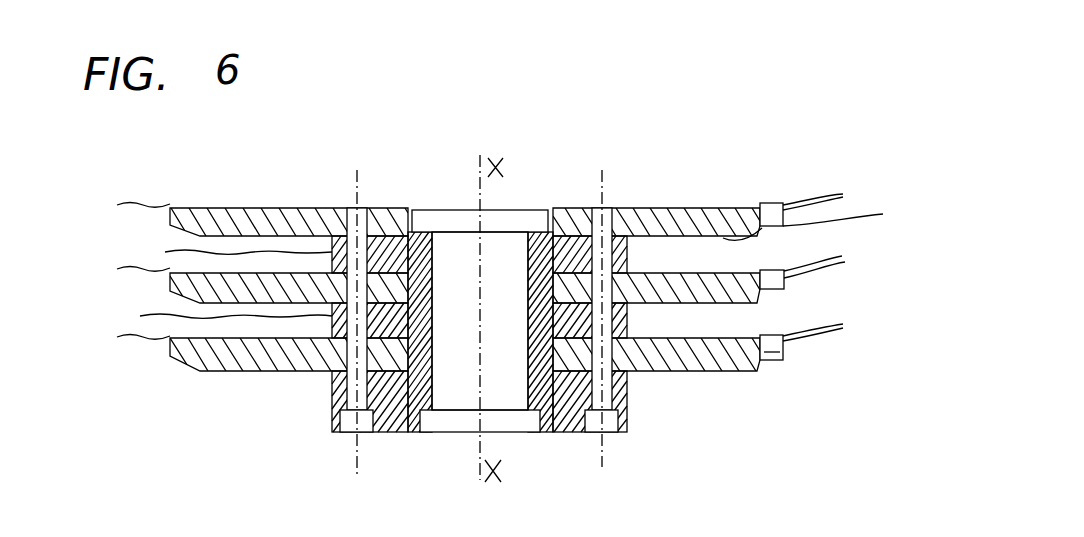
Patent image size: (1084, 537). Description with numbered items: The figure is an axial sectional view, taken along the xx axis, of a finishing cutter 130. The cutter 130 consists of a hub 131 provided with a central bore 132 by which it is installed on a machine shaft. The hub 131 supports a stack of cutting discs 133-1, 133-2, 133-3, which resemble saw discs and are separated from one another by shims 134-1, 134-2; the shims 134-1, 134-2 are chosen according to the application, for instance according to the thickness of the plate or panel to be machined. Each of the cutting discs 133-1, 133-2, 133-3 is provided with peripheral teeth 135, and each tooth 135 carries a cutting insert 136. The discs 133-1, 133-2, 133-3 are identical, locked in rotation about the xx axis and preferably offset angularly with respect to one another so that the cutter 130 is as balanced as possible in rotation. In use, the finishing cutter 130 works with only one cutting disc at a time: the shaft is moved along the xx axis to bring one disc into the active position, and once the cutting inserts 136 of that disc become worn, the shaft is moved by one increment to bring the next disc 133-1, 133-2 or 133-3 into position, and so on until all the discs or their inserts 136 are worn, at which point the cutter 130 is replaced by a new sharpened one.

The cutter 130 is at (693, 161).
The hub 131 is at (552, 380).
The bore 132 is at (497, 275).
The cutting disc 133-1 is at (727, 345).
The cutting disc 133-2 is at (773, 298).
The cutting disc 133-3 is at (695, 212).
The shim 134-1 is at (232, 329).
The shim 134-2 is at (235, 262).
The peripheral tooth 135 is at (778, 357).
The cutting insert 136 is at (838, 264).